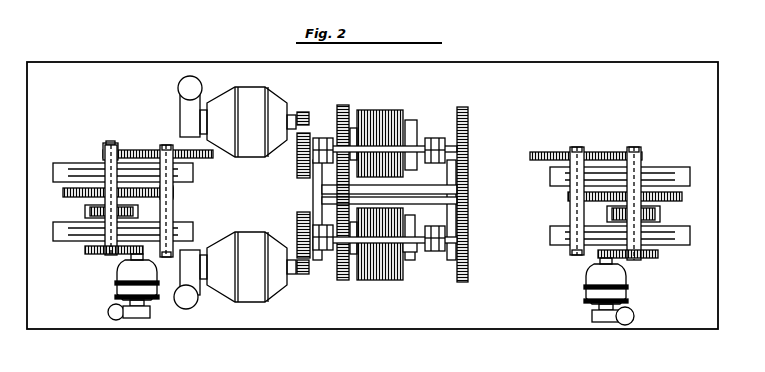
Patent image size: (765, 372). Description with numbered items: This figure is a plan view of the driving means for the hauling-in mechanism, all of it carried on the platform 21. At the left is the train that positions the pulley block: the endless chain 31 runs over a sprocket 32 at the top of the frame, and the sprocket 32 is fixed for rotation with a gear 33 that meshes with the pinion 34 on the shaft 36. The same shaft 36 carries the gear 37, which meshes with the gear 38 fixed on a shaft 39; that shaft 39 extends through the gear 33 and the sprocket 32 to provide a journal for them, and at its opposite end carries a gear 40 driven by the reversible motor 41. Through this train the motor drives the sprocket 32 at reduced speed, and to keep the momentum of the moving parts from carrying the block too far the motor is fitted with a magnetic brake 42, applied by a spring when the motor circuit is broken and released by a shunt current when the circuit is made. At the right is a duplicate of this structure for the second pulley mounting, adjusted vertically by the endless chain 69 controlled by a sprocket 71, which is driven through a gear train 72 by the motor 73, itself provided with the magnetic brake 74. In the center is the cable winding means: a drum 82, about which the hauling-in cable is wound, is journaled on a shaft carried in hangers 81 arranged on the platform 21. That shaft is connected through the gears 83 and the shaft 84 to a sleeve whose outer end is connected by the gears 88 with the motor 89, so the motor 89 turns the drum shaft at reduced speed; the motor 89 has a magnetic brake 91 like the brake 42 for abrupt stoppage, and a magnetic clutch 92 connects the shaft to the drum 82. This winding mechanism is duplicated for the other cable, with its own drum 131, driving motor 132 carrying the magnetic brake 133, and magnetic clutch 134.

The platform 21 is at (573, 95).
The endless chain 31 is at (133, 211).
The sprocket 32 is at (90, 211).
The gear 33 is at (63, 192).
The pinion 34 is at (173, 192).
The shaft 36 is at (171, 212).
The gear 37 is at (205, 158).
The gear 38 is at (103, 153).
The shaft 39 is at (118, 136).
The gear 40 is at (92, 254).
The reversible motor 41 is at (117, 287).
The magnetic brake 42 is at (134, 318).
The endless chain 69 is at (612, 214).
The sprocket 71 is at (655, 214).
The gear train 72 is at (608, 152).
The motor 73 is at (627, 286).
The magnetic brake 74 is at (634, 316).
The hangers 81 is at (318, 194).
The drum 82 is at (392, 280).
The gears 83 is at (468, 240).
The shaft 84 is at (416, 251).
The gears 88 is at (297, 230).
The motor 89 is at (256, 265).
The magnetic brake 91 is at (191, 300).
The magnetic clutch 92 is at (418, 222).
The drum 131 is at (360, 112).
The driving motor 132 is at (250, 93).
The magnetic brake 133 is at (192, 88).
The magnetic clutch 134 is at (413, 131).